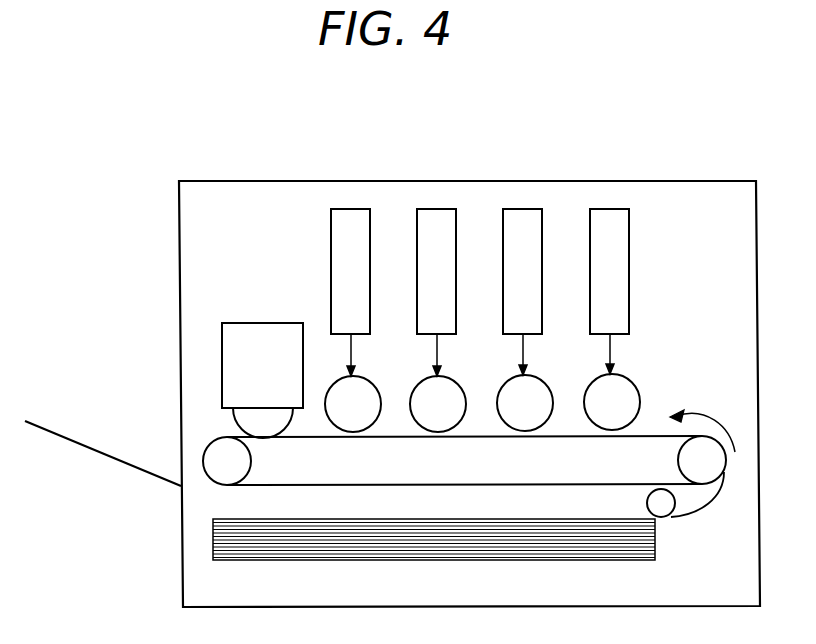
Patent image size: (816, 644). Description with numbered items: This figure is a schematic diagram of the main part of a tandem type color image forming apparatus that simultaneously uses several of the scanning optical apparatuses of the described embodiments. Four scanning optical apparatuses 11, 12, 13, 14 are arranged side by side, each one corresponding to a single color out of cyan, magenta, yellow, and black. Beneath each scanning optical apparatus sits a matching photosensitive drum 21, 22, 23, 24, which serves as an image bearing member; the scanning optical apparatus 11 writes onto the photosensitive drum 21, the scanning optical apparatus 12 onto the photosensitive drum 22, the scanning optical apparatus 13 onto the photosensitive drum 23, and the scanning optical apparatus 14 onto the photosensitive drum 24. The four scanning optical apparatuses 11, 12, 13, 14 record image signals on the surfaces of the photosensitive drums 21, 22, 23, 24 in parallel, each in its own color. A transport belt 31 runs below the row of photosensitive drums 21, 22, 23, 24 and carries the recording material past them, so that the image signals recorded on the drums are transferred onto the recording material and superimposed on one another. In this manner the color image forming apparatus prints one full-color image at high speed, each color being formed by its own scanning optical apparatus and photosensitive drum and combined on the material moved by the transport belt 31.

The scanning optical apparatus 11 is at (352, 209).
The scanning optical apparatus 12 is at (438, 209).
The scanning optical apparatus 13 is at (523, 209).
The scanning optical apparatus 14 is at (610, 209).
The photosensitive drum 21 is at (333, 379).
The photosensitive drum 22 is at (418, 379).
The photosensitive drum 23 is at (505, 378).
The photosensitive drum 24 is at (591, 377).
The transport belt 31 is at (657, 436).